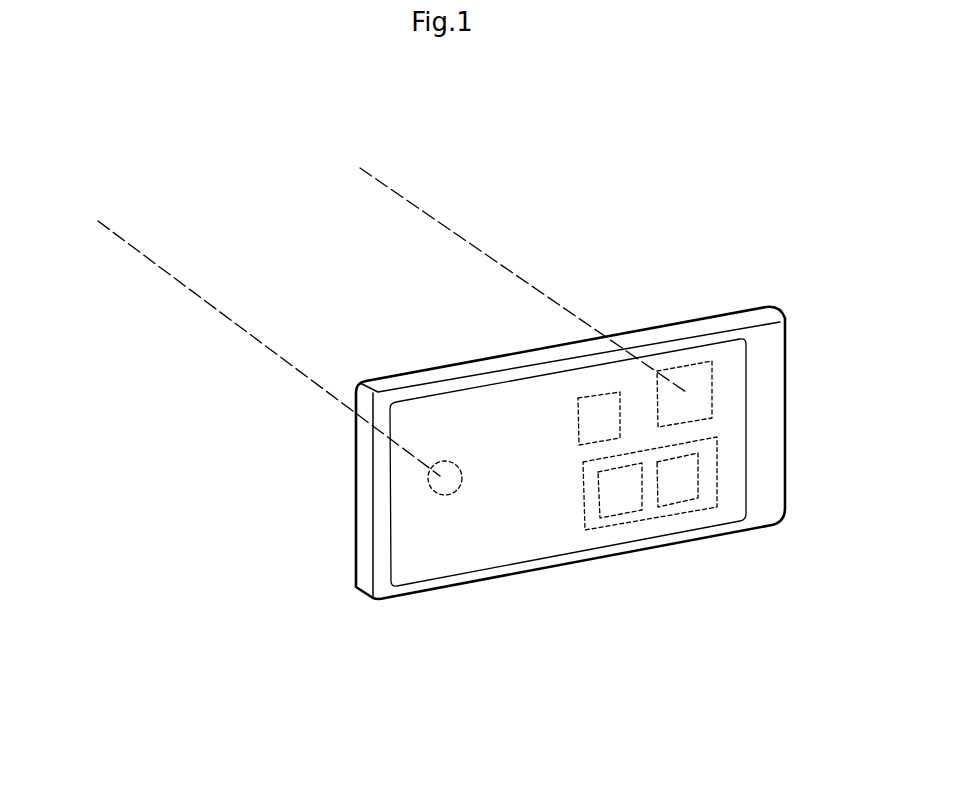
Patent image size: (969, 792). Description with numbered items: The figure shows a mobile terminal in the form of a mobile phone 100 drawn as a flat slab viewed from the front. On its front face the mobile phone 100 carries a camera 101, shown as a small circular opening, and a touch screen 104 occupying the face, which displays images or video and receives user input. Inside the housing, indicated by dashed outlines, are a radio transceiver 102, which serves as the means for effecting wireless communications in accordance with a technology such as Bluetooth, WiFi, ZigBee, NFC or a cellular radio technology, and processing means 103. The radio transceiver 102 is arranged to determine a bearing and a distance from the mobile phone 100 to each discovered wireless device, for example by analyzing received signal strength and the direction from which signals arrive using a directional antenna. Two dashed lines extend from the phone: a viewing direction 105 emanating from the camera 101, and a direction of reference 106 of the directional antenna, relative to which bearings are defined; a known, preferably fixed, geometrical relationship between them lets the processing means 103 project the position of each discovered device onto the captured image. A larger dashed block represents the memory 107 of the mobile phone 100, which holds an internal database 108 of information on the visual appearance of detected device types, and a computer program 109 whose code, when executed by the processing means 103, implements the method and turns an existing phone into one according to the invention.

The mobile phone 100 is at (363, 615).
The camera 101 is at (440, 482).
The radio transceiver 102 is at (700, 393).
The processing means 103 is at (605, 418).
The touch screen 104 is at (512, 502).
The viewing direction 105 is at (152, 259).
The direction of reference 106 is at (442, 225).
The memory 107 is at (713, 477).
The internal database 108 is at (678, 490).
The computer program 109 is at (625, 498).